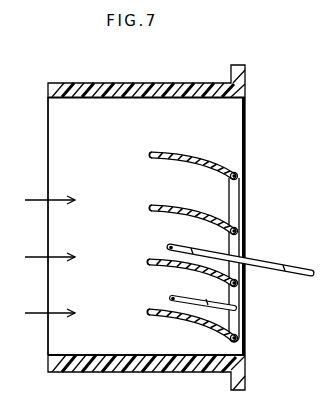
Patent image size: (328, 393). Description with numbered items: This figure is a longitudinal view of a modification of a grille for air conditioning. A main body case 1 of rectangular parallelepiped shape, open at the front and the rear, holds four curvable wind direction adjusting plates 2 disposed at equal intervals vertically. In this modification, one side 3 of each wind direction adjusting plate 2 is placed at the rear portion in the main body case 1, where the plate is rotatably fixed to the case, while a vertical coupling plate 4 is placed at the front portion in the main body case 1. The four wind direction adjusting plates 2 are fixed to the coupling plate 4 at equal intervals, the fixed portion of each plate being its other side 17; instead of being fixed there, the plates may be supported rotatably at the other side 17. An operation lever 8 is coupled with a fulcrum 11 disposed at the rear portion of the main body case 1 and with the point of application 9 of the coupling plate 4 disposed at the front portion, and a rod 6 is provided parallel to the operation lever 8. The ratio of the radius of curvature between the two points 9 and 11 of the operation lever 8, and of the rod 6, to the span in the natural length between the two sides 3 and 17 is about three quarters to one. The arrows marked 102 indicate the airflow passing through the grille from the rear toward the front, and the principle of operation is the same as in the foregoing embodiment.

The main body case 1 is at (131, 85).
The wind direction adjusting plate 2 is at (177, 152).
The one side 3 is at (152, 155).
The coupling plate 4 is at (237, 189).
The rod 6 is at (208, 299).
The operation lever 8 is at (288, 268).
The point of application 9 is at (245, 260).
The fulcrum 11 is at (172, 245).
The other side 17 is at (238, 175).
The flow direction 102 is at (37, 313).